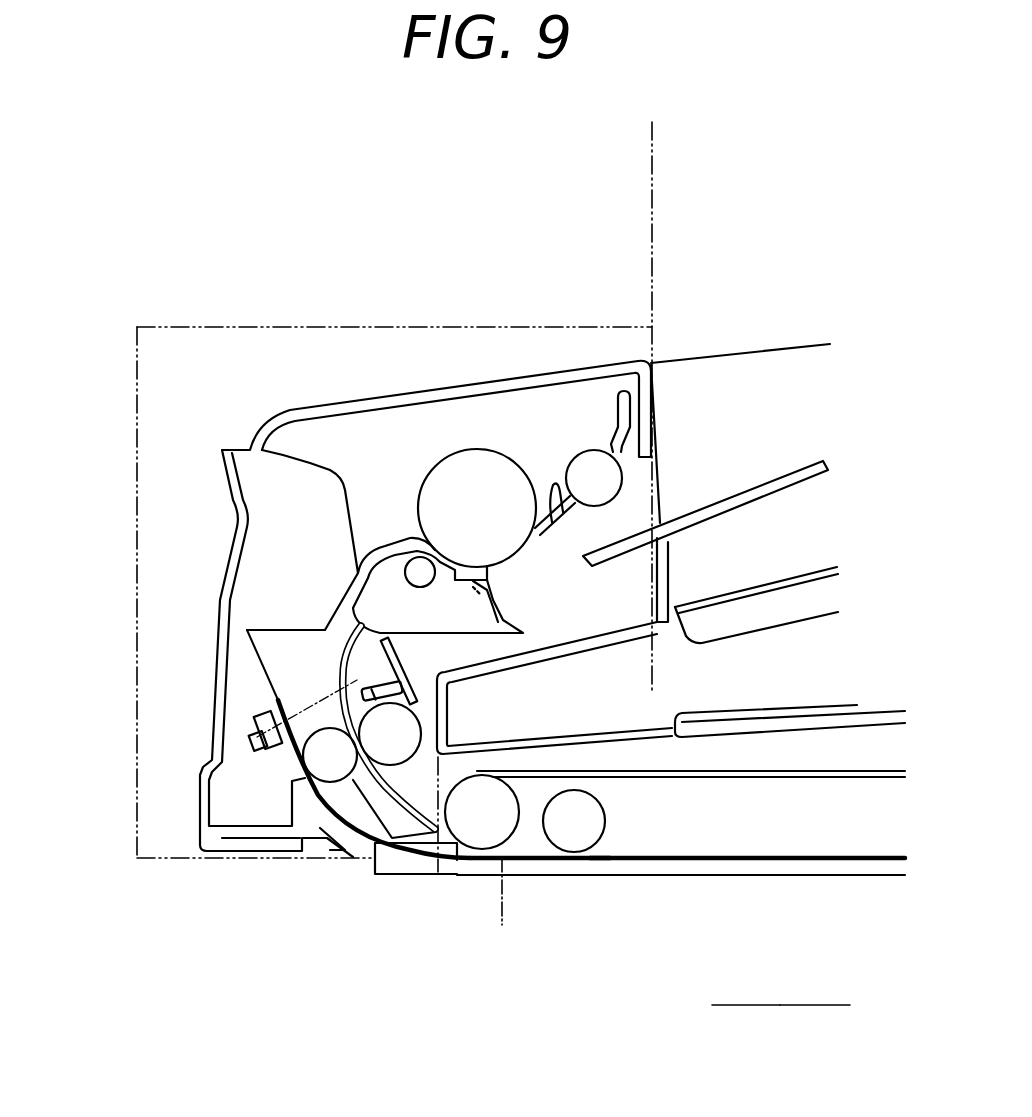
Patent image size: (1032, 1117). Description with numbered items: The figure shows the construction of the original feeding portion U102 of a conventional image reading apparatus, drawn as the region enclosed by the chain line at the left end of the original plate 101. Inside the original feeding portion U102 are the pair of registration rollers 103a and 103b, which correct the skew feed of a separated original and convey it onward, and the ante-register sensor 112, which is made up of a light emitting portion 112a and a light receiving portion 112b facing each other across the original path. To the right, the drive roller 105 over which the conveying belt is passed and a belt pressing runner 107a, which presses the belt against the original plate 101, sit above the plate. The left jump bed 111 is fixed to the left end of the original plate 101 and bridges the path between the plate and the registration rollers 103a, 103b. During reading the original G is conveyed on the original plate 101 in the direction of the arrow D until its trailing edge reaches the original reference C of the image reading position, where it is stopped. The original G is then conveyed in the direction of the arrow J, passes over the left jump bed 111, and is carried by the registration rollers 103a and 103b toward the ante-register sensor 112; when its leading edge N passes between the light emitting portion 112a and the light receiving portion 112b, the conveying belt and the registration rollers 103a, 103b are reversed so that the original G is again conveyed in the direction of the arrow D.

The original feeding portion U102 is at (415, 326).
The original plate 101 is at (783, 875).
The registration roller 103a is at (407, 725).
The registration roller 103b is at (320, 755).
The drive roller 105 is at (475, 837).
The belt pressing runner 107a is at (600, 810).
The left jump bed 111 is at (398, 868).
The ante-register sensor 112 is at (227, 708).
The light emitting portion 112a is at (400, 660).
The light receiving portion 112b is at (260, 716).
The leading edge N is at (277, 707).
The original reference C is at (512, 912).
The original G is at (603, 862).
The arrow J is at (729, 1005).
The arrow D is at (835, 1005).